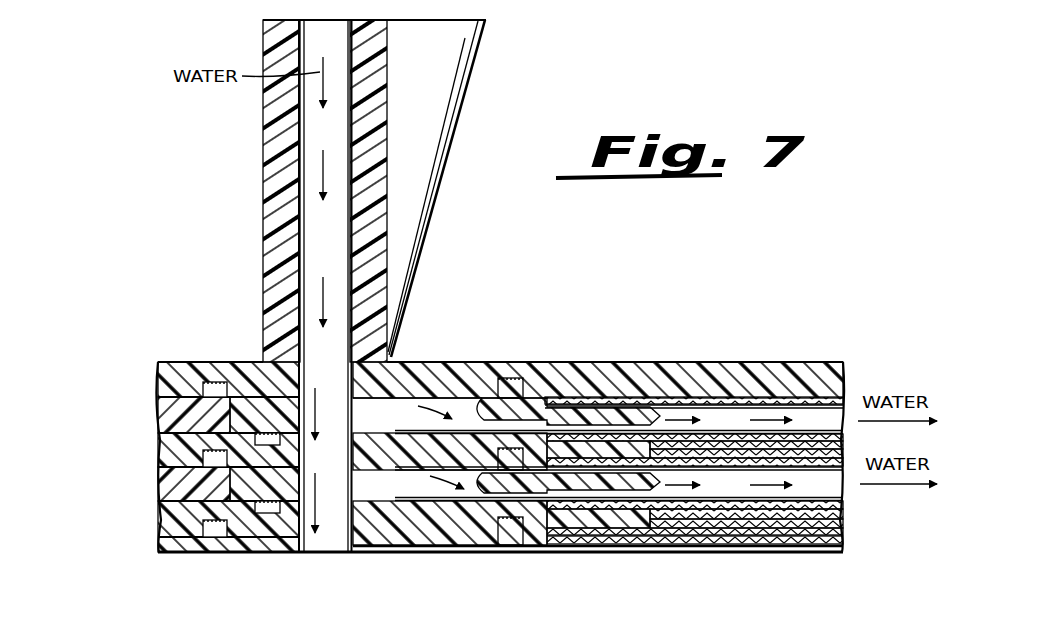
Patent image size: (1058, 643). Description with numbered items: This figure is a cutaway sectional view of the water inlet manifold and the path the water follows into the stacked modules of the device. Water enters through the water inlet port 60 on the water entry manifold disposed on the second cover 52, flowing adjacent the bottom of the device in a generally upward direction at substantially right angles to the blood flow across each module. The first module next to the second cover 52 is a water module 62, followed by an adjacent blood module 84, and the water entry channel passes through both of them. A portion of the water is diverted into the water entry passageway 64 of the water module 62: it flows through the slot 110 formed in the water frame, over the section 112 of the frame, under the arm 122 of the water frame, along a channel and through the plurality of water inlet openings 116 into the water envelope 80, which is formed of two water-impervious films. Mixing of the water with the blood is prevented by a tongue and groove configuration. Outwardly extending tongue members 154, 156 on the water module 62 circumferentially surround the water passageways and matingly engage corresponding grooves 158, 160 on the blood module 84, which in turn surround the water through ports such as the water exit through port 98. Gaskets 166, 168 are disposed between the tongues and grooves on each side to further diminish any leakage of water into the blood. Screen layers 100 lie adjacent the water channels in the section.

The second cover 52 is at (636, 372).
The water inlet port 60 is at (272, 138).
The water module 62 is at (170, 412).
The water entry passageway 64 is at (393, 355).
The water envelope 80 is at (800, 400).
The blood module 84 is at (175, 458).
The water exit through port 98 is at (362, 530).
The screen layers 100 is at (843, 433).
The slot 110 is at (392, 380).
The section of the water frame 112 is at (438, 395).
The water inlet openings 116 is at (490, 395).
The arm of the water frame 122 is at (650, 412).
The tongue member 154 is at (222, 380).
The tongue member 156 is at (274, 382).
The groove 158 is at (262, 398).
The groove 160 is at (170, 440).
The gasket 166 is at (217, 377).
The gasket 168 is at (274, 553).